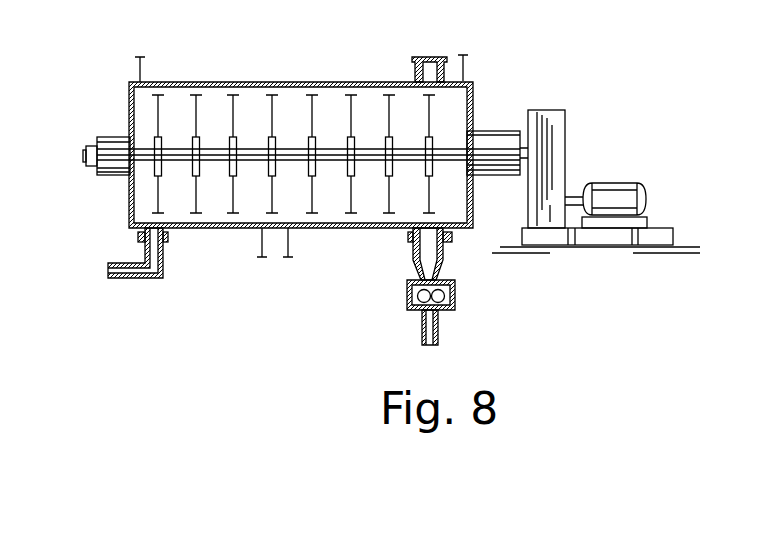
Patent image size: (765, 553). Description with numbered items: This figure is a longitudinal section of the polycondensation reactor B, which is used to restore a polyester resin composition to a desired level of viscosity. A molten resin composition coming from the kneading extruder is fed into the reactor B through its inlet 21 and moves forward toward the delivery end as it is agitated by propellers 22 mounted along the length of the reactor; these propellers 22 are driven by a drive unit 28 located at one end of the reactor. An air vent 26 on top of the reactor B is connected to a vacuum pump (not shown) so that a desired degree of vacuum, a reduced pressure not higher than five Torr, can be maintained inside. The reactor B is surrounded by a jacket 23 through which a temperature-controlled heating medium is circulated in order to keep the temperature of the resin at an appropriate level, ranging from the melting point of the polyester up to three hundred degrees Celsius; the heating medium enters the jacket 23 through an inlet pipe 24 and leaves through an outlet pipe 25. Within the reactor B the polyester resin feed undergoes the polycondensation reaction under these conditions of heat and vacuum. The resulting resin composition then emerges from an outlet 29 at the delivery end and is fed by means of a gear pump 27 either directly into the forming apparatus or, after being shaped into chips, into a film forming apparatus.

The inlet 21 is at (123, 280).
The propellers 22 is at (231, 202).
The jacket 23 is at (282, 82).
The inlet pipe 24 is at (291, 248).
The outlet pipe 25 is at (141, 63).
The air vent 26 is at (436, 57).
The gear pump 27 is at (457, 295).
The drive unit 28 is at (600, 246).
The outlet 29 is at (438, 333).
The polycondensation reactor B is at (84, 153).